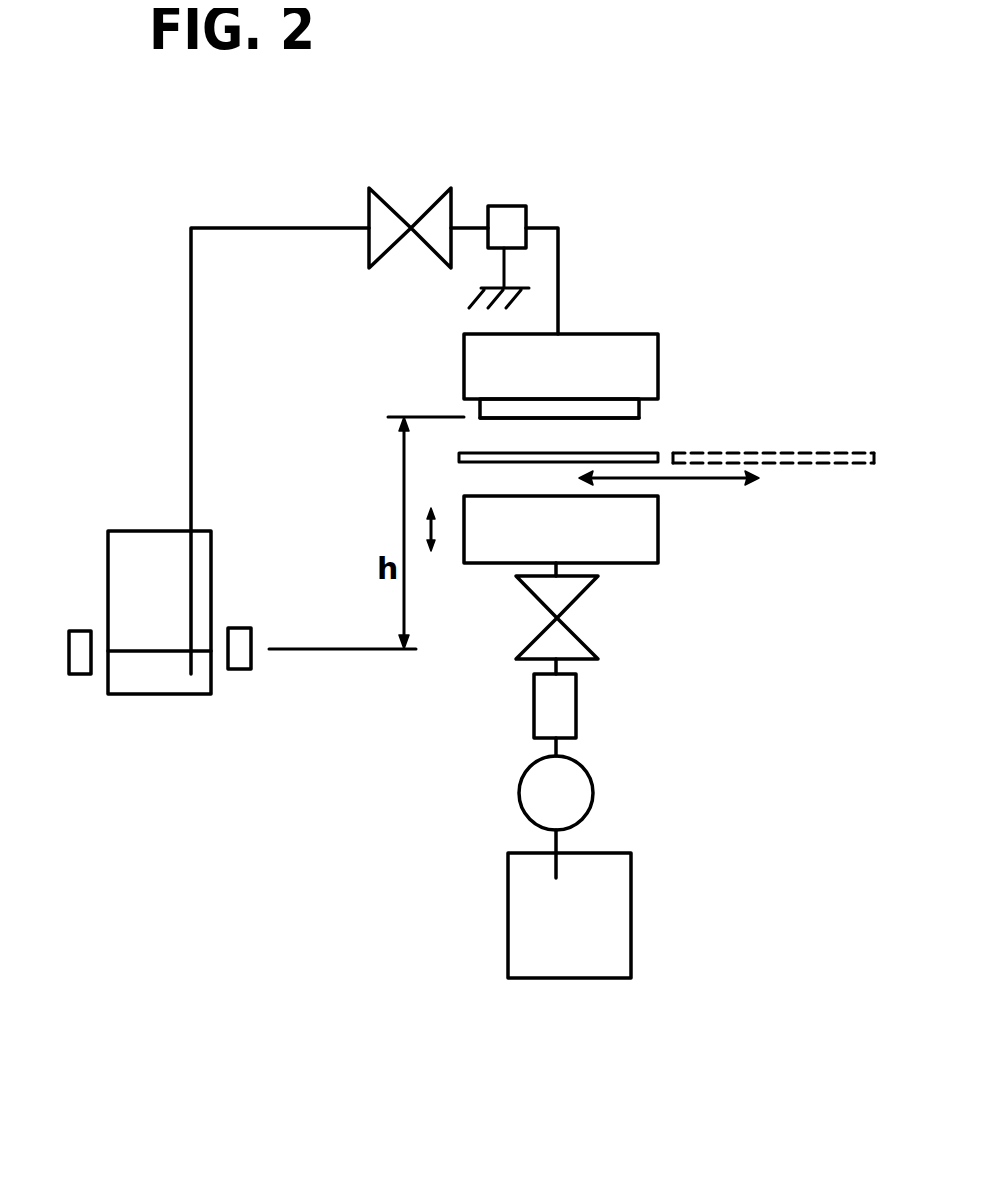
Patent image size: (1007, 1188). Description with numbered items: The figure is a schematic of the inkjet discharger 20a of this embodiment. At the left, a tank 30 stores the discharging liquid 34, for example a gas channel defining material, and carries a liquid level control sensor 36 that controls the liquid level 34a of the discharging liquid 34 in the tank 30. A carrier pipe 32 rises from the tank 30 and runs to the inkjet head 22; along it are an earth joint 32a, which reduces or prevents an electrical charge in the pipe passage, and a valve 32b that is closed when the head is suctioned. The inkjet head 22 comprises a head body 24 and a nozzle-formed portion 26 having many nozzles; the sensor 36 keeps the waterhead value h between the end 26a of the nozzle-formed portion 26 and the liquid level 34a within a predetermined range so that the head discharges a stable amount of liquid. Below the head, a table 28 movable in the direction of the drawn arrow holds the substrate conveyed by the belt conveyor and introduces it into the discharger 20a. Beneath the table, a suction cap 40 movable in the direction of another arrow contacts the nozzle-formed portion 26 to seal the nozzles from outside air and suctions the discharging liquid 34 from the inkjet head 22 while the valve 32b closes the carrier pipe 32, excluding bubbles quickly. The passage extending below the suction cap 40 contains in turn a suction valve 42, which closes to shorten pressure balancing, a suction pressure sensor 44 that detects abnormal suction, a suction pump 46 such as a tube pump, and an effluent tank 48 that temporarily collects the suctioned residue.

The discharger 20a is at (770, 138).
The inkjet head 22 is at (676, 290).
The head body 24 is at (657, 350).
The nozzle-formed portion 26 is at (638, 407).
The end of nozzle-formed portion 26a is at (592, 419).
The table 28 is at (657, 452).
The tank 30 is at (200, 695).
The carrier pipe 32 is at (292, 227).
The earth joint 32a is at (524, 208).
The valve 32b is at (393, 217).
The discharging liquid 34 is at (120, 695).
The liquid level 34a is at (193, 647).
The liquid level control sensor 36 is at (250, 665).
The suction cap 40 is at (657, 549).
The suction valve 42 is at (585, 591).
The suction pressure sensor 44 is at (575, 701).
The suction pump 46 is at (520, 778).
The effluent tank 48 is at (565, 977).